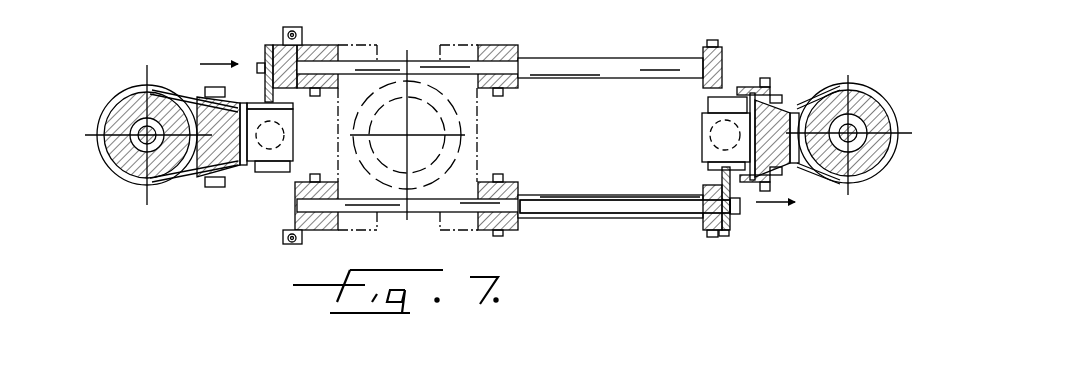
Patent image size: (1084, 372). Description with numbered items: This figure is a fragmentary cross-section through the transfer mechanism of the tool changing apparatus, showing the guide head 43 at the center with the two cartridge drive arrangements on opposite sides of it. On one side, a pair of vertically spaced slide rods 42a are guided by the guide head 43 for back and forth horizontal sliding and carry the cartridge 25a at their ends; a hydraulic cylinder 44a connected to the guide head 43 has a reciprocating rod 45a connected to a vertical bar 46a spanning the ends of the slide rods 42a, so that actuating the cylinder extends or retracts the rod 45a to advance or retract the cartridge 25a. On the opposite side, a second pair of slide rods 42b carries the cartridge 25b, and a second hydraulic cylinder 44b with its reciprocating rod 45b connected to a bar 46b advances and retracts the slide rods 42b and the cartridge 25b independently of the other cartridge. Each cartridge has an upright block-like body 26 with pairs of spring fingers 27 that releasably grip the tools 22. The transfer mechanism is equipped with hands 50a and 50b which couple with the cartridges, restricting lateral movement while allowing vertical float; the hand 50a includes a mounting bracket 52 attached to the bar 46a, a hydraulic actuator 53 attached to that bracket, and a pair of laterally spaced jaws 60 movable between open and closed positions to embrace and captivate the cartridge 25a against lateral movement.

The tools 22 is at (118, 162).
The cartridge 25a is at (792, 108).
The cartridge 25b is at (195, 105).
The body 26 is at (193, 168).
The spring fingers 27 is at (840, 88).
The rods 42a is at (567, 214).
The rods 42b is at (577, 60).
The guide head 43 is at (472, 153).
The hydraulic cylinder 44a is at (407, 211).
The hydraulic cylinder 44b is at (383, 63).
The reciprocating rod 45a is at (580, 200).
The reciprocating rod 45b is at (312, 46).
The vertical bar 46a is at (705, 218).
The bar 46b is at (268, 45).
The hand 50a is at (755, 88).
The hand 50b is at (246, 186).
The mounting bracket 52 is at (724, 236).
The hydraulic actuator 53 is at (708, 117).
The jaws 60 is at (743, 95).